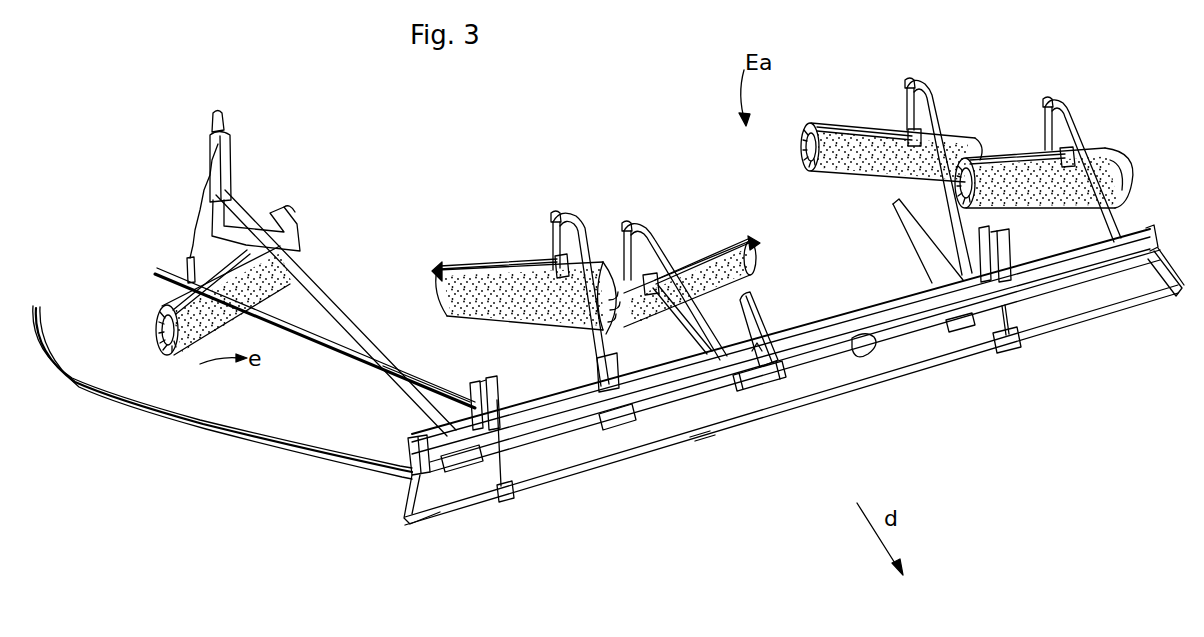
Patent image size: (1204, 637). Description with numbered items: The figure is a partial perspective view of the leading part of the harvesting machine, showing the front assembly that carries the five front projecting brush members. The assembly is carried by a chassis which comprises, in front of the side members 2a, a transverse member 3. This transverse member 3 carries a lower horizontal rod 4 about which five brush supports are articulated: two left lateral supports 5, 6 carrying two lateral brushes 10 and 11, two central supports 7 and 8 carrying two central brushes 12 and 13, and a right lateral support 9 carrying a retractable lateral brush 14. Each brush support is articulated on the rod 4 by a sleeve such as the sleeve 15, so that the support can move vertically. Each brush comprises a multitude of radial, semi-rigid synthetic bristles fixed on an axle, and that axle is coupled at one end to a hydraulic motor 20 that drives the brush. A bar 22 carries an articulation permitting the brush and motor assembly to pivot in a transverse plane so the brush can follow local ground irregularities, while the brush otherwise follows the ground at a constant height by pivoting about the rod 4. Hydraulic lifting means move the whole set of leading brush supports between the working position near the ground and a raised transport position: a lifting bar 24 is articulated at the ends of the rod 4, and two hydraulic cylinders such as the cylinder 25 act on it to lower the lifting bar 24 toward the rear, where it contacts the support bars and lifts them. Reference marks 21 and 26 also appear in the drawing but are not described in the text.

The side members 2a is at (897, 233).
The transverse member 3 is at (843, 318).
The lower horizontal rod 4 is at (823, 357).
The left lateral support 5 is at (1116, 232).
The left lateral support 6 is at (942, 218).
The central support 7 is at (693, 323).
The central support 8 is at (583, 333).
The right lateral support 9 is at (365, 330).
The lateral brush 10 is at (1013, 180).
The lateral brush 11 is at (840, 150).
The central brush 12 is at (720, 272).
The central brush 13 is at (473, 300).
The retractable lateral brush 14 is at (273, 292).
The sleeve 15 is at (760, 380).
The hydraulic motor 20 is at (595, 287).
The pointed end 21 is at (757, 243).
The bar 22 is at (697, 260).
The lifting bar 24 is at (672, 443).
The hydraulic cylinder 25 is at (513, 484).
The skid runner 26 is at (207, 438).